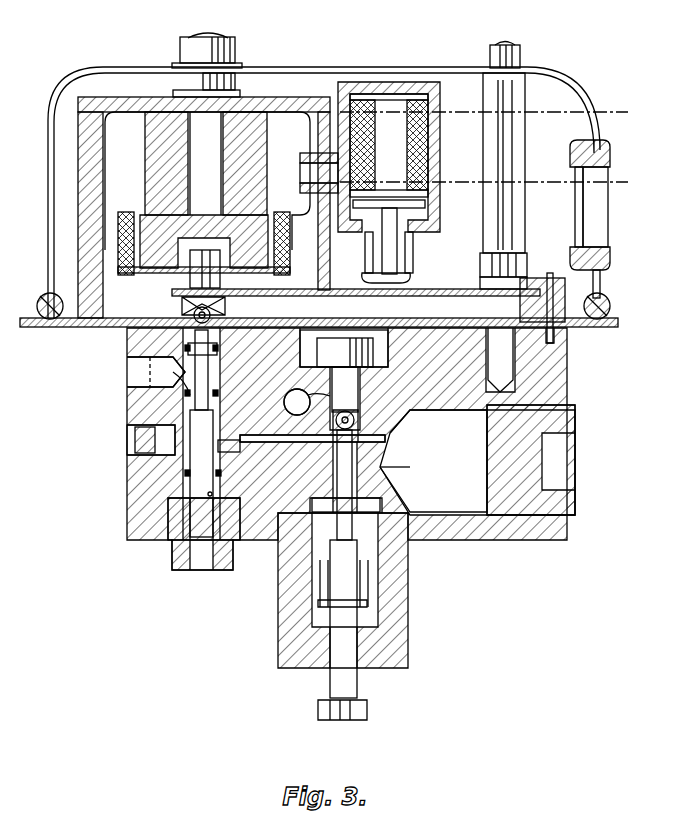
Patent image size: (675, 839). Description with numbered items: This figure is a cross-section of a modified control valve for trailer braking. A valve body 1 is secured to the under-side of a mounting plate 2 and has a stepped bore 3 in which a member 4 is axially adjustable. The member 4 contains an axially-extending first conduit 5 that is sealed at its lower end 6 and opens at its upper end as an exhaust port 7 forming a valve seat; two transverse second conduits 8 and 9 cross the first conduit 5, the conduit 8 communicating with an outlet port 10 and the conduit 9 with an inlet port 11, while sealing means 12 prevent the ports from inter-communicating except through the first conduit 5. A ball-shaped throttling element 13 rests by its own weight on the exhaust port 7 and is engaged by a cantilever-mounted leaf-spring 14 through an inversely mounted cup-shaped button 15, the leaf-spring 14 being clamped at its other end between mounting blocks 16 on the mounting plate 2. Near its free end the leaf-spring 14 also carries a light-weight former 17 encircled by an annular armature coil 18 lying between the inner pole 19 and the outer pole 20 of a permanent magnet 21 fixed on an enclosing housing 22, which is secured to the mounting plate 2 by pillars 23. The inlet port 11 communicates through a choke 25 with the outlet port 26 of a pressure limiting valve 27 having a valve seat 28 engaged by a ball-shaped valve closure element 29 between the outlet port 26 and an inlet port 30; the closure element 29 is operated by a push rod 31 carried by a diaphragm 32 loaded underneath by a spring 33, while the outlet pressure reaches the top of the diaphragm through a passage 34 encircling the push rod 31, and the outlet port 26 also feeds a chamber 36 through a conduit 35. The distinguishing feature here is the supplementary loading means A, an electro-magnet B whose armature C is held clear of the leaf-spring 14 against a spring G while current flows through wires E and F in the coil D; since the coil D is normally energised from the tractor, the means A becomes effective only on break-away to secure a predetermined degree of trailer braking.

The valve body 1 is at (125, 518).
The mounting plate 2 is at (50, 328).
The stepped bore 3 is at (210, 382).
The member 4 is at (180, 538).
The first conduit 5 is at (215, 494).
The lower end 6 is at (205, 572).
The exhaust port 7 is at (212, 338).
The second conduit 8 is at (178, 388).
The second conduit 9 is at (178, 462).
The outlet port 10 is at (128, 373).
The inlet port 11 is at (228, 452).
The sealing means 12 is at (185, 348).
The throttling element 13 is at (193, 312).
The leaf-spring 14 is at (400, 294).
The cup-shaped button 15 is at (226, 306).
The mounting blocks 16 is at (538, 285).
The former 17 is at (150, 272).
The armature coil 18 is at (126, 212).
The inner pole 19 is at (265, 230).
The outer pole 20 is at (78, 258).
The permanent magnet 21 is at (245, 92).
The enclosing housing 22 is at (358, 62).
The pillars 23 is at (512, 100).
The choke 25 is at (290, 444).
The outlet port 26 is at (332, 450).
The pressure limiting valve 27 is at (398, 498).
The valve seat 28 is at (352, 416).
The valve closure element 29 is at (360, 372).
The inlet port 30 is at (297, 395).
The push rod 31 is at (405, 470).
The diaphragm 32 is at (405, 565).
The spring 33 is at (368, 583).
The passage 34 is at (338, 500).
The conduit 35 is at (412, 445).
The chamber 36 is at (500, 520).
The supplementary loading means A is at (440, 148).
The electro-magnet B is at (405, 92).
The armature C is at (398, 250).
The coil D is at (355, 103).
The wire E is at (492, 112).
The wire F is at (492, 205).
The spring G is at (412, 276).